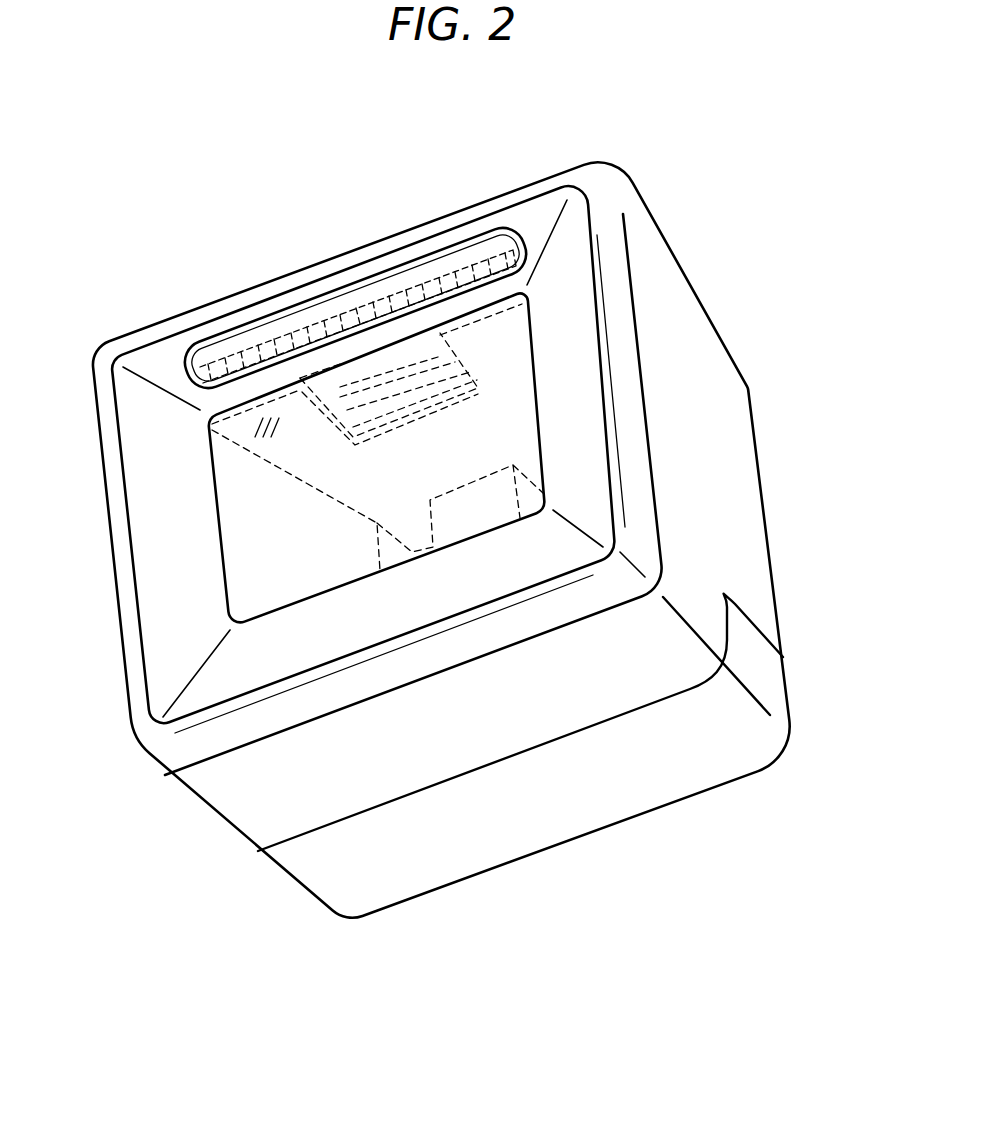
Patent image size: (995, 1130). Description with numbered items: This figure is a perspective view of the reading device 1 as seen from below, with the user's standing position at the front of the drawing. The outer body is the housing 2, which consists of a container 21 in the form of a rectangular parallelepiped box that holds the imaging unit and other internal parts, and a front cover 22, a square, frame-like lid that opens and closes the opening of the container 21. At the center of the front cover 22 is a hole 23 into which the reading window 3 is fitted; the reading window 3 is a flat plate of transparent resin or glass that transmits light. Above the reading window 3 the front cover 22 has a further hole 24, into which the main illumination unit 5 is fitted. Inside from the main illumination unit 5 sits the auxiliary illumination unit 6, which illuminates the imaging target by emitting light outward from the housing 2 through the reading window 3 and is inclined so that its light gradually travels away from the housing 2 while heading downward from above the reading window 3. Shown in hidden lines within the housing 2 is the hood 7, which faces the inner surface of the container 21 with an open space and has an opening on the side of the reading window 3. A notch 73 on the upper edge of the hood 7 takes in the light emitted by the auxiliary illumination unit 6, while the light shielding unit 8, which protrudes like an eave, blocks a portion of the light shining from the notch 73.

The reading device 1 is at (643, 119).
The housing 2 is at (740, 478).
The container 21 is at (740, 533).
The front cover 22 is at (167, 627).
The hole 23 is at (224, 558).
The hole 24 is at (170, 360).
The reading window 3 is at (240, 498).
The main illumination unit 5 is at (235, 340).
The auxiliary illumination unit 6 is at (388, 364).
The hood 7 is at (470, 423).
The notch 73 is at (340, 383).
The light shielding unit 8 is at (425, 363).